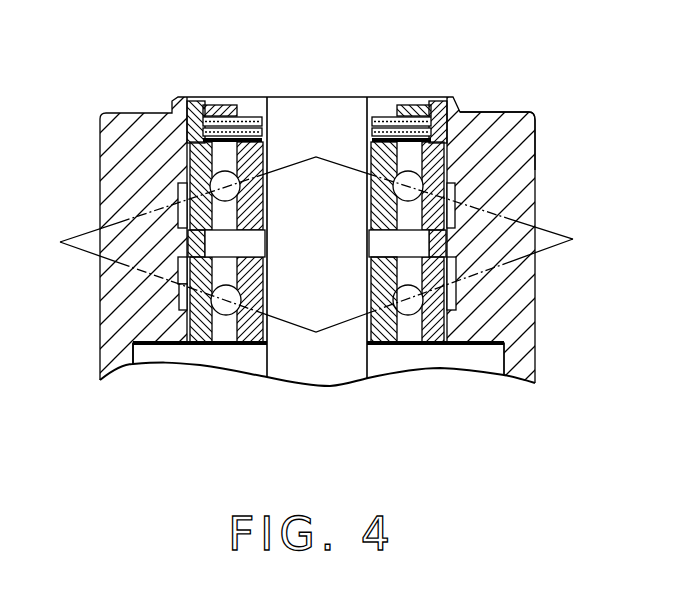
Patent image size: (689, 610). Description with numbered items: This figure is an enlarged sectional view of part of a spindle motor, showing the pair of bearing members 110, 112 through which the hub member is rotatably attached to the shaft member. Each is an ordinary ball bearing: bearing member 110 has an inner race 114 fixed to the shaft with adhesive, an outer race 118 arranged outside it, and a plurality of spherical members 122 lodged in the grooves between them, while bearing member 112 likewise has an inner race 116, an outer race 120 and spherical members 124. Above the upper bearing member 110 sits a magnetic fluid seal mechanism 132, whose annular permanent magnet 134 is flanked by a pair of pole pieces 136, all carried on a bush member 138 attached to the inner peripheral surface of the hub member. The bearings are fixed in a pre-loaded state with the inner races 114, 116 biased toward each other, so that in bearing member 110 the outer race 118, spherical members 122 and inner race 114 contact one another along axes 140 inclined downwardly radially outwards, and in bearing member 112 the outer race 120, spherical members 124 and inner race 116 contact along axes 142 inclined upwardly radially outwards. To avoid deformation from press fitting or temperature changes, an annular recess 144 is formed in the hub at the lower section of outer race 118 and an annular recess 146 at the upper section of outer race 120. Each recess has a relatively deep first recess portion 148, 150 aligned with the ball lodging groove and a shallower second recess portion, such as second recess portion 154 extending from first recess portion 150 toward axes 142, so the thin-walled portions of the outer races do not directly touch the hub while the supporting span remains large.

The bearing member 110 is at (458, 150).
The bearing member 112 is at (473, 344).
The inner race 114 is at (258, 146).
The inner race 116 is at (262, 288).
The outer race 118 is at (197, 165).
The outer race 120 is at (466, 333).
The spherical members 122 is at (242, 204).
The spherical members 124 is at (228, 316).
The magnetic fluid seal mechanism 132 is at (197, 92).
The annular permanent magnet 134 is at (219, 120).
The pole pieces 136 is at (264, 130).
The bush member 138 is at (420, 112).
The axes 140 is at (120, 222).
The axes 142 is at (178, 290).
The annular recess 144 is at (168, 183).
The annular recess 146 is at (468, 299).
The first recess portion 148 is at (530, 114).
The first recess portion 150 is at (162, 344).
The second recess portion 154 is at (180, 258).